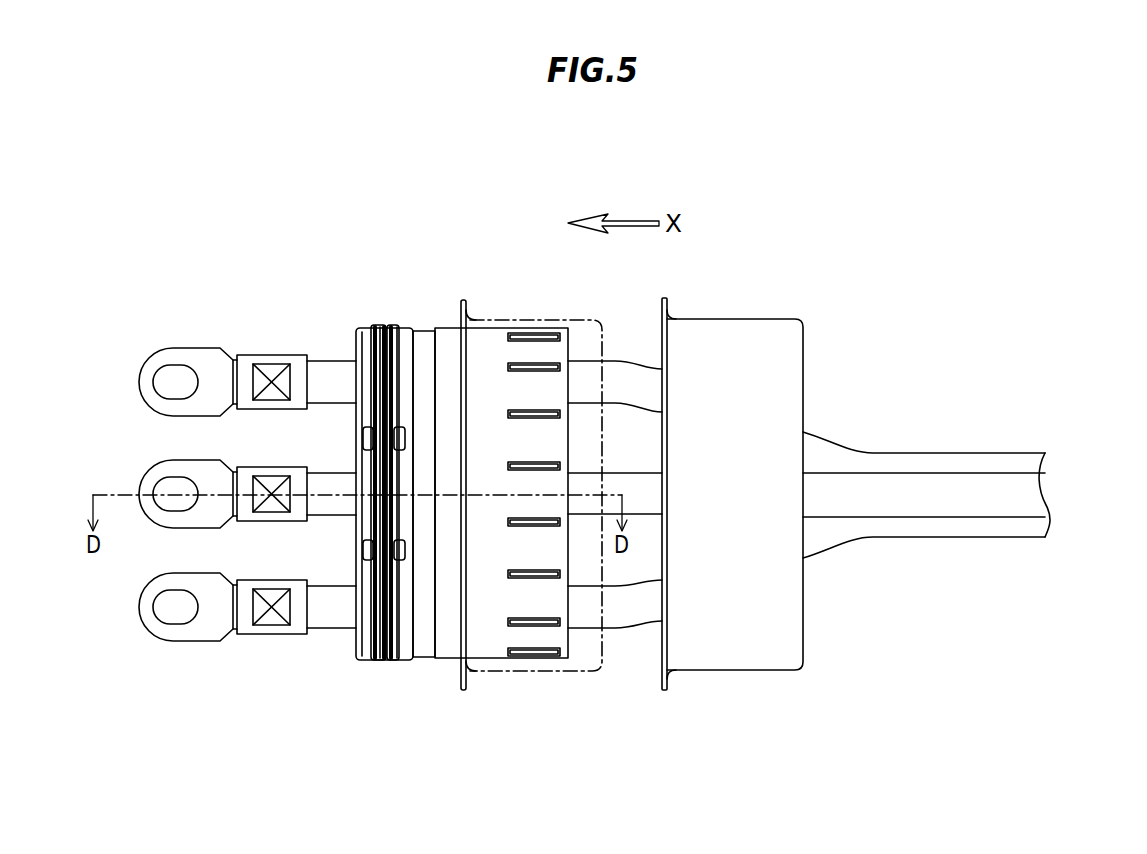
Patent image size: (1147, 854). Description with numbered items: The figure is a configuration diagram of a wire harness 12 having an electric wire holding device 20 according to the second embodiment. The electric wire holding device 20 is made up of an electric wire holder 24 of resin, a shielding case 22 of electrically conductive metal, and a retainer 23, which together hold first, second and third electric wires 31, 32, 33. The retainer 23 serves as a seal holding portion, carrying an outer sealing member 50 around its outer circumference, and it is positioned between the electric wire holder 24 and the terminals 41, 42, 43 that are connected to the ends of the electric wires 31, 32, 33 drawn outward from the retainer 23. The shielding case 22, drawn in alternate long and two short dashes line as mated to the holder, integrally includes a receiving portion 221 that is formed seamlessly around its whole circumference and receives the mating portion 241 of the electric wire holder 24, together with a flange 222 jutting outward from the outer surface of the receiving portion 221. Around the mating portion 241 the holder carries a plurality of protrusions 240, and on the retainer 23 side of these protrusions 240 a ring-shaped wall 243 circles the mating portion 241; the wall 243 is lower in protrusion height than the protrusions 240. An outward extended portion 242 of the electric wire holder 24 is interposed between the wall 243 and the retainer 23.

The wire harness 12 is at (207, 175).
The electric wire holding device 20 is at (678, 743).
The shielding case 22 is at (812, 236).
The receiving portion 221 is at (747, 330).
The flange 222 is at (668, 305).
The retainer 23 is at (370, 327).
The electric wire holder 24 is at (483, 670).
The protrusions 240 is at (533, 575).
The mating portion 241 is at (482, 337).
The outward extended portion 242 is at (423, 337).
The wall 243 is at (448, 663).
The first electric wire 31 is at (1032, 463).
The second electric wire 32 is at (1032, 497).
The third electric wire 33 is at (1032, 527).
The terminal 41 is at (150, 368).
The terminal 42 is at (150, 480).
The terminal 43 is at (148, 622).
The outer sealing member 50 is at (387, 660).